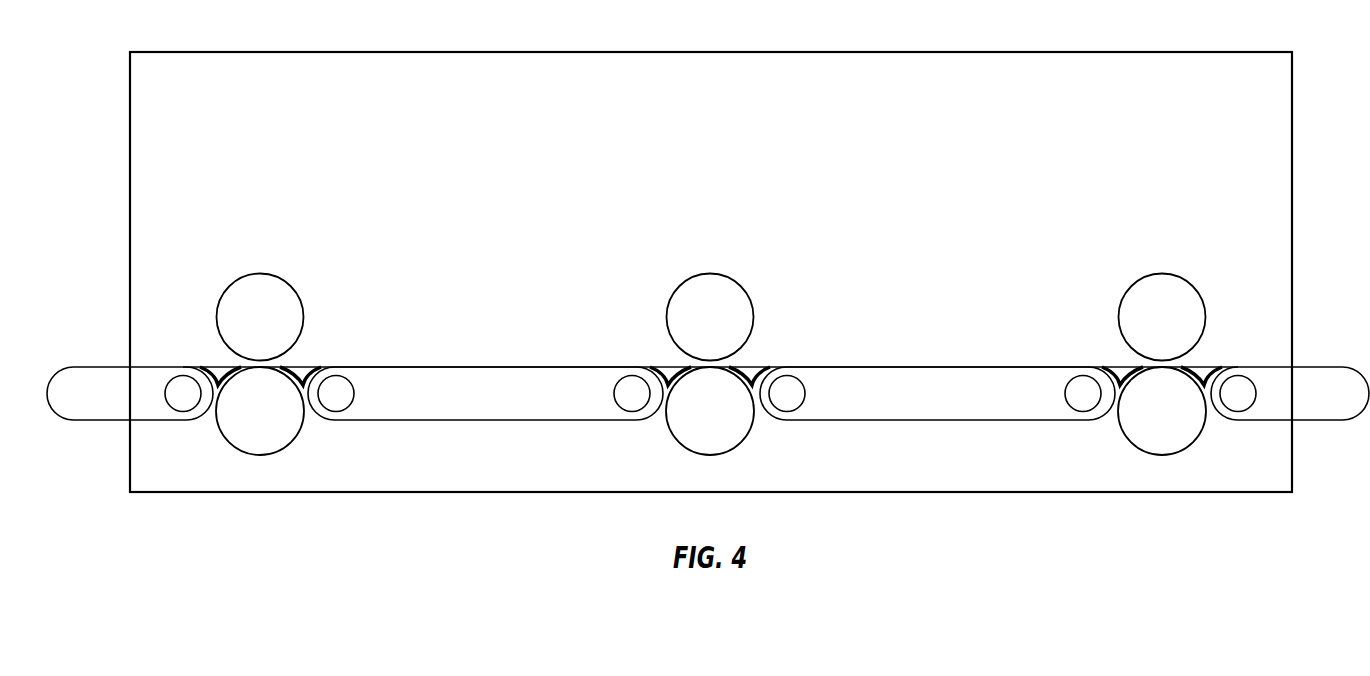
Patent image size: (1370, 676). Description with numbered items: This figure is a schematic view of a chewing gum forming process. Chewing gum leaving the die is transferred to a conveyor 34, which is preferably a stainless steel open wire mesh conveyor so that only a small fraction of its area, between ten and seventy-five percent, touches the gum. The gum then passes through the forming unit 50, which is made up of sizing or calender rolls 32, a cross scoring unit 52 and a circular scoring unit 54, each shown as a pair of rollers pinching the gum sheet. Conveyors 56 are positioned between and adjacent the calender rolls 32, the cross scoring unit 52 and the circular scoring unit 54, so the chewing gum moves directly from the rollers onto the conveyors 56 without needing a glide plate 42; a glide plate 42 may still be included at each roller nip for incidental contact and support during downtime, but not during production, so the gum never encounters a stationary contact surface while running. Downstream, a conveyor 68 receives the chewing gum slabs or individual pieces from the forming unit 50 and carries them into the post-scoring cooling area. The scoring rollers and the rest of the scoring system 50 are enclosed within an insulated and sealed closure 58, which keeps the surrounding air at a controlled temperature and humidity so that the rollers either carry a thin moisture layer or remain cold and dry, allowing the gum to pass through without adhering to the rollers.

The calender rolls 32 is at (246, 330).
The conveyor 34 is at (116, 407).
The glide plate 42 is at (213, 365).
The forming unit 50 is at (590, 526).
The cross scoring unit 52 is at (696, 330).
The circular scoring unit 54 is at (1148, 330).
The conveyors 56 is at (471, 407).
The closure 58 is at (490, 494).
The conveyor 68 is at (1277, 407).